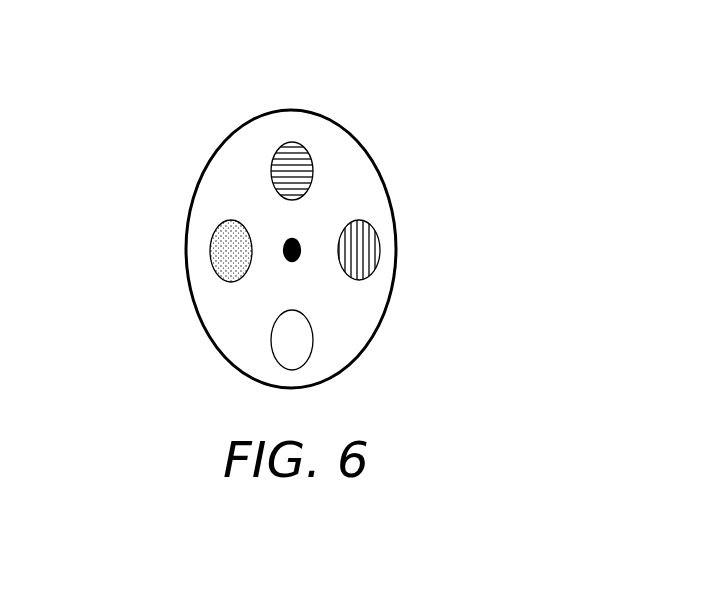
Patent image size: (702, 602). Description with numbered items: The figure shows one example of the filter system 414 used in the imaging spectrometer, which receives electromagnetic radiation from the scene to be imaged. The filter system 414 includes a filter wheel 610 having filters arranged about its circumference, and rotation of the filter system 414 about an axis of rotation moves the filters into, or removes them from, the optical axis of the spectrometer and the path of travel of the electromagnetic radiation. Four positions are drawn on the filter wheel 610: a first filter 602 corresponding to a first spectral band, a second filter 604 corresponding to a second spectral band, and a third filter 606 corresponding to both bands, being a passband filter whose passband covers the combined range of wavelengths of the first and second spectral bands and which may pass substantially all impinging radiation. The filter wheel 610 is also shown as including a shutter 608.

The filter system 414 is at (433, 70).
The filter wheel 610 is at (202, 177).
The first filter 602 is at (273, 155).
The second filter 604 is at (370, 227).
The third filter 606 is at (275, 357).
The shutter 608 is at (213, 235).